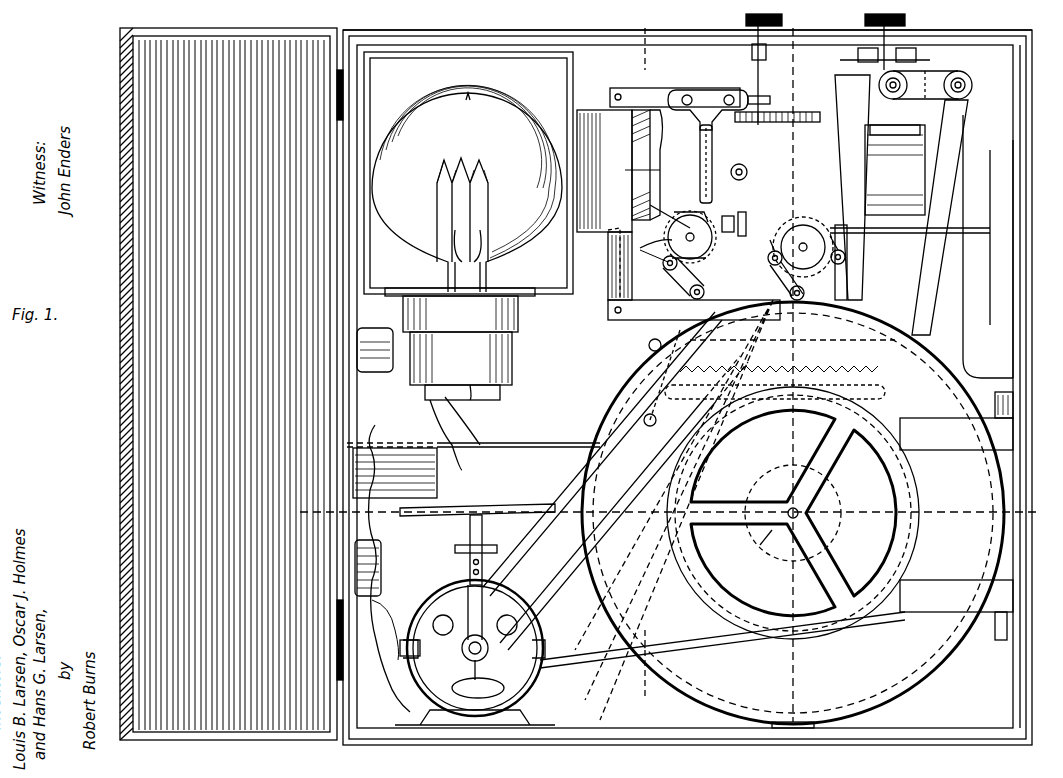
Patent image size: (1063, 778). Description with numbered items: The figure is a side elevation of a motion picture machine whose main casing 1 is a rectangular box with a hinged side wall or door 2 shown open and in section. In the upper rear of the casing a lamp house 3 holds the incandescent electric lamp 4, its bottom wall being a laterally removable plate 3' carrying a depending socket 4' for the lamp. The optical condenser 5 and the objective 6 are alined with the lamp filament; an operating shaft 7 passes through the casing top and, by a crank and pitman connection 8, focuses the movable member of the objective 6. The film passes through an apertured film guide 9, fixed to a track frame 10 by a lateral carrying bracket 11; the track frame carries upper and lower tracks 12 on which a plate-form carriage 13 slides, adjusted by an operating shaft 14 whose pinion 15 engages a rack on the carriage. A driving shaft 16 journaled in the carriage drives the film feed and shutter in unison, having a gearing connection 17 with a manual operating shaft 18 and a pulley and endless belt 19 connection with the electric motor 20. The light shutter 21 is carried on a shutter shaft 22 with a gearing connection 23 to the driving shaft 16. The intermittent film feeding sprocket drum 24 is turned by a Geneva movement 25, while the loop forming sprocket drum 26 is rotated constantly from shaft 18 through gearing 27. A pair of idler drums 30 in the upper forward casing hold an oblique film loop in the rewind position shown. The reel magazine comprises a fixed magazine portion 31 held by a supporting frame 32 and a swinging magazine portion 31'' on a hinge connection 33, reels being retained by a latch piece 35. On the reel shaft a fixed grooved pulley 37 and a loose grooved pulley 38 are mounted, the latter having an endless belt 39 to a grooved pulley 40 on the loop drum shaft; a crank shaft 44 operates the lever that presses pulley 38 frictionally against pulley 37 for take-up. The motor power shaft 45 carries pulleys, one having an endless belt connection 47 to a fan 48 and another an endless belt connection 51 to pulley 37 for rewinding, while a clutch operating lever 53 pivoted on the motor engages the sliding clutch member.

The main casing 1 is at (655, 44).
The hinged side wall or door 2 is at (262, 38).
The lamp house 3 is at (468, 151).
The laterally removable plate 3' is at (469, 305).
The incandescent electric lamp 4 is at (467, 188).
The depending socket 4' is at (460, 383).
The optical condenser 5 is at (632, 158).
The objective 6 is at (895, 170).
The operating shaft 7 is at (885, 55).
The crank and pitman connection 8 is at (905, 118).
The apertured film guide 9 is at (714, 148).
The track frame 10 is at (599, 266).
The lateral carrying bracket 11 is at (700, 92).
The tracks or slideways 12 is at (640, 95).
The carriage 13 is at (640, 128).
The operating shaft 14 is at (755, 74).
The pinion 15 is at (762, 124).
The driving shaft 16 is at (712, 268).
The gearing connection 17 is at (640, 178).
The operating shaft 18 is at (748, 170).
The pulley and endless belt 19 is at (580, 460).
The electric motor 20 is at (475, 652).
The light shutter 21 is at (438, 472).
The shutter shaft 22 is at (944, 235).
The gearing connection 23 is at (730, 216).
The intermittent film feeding sprocket drum 24 is at (640, 204).
The Geneva movement 25 is at (640, 252).
The loop forming sprocket drum 26 is at (860, 268).
The gearing 27 is at (790, 218).
The idler drums 30 is at (820, 78).
The fixed magazine portion 31 is at (670, 510).
The swinging magazine portion 31'' is at (628, 378).
The supporting standard or frame 32 is at (812, 654).
The hinge connection 33 is at (962, 458).
The latch piece 35 is at (788, 513).
The grooved pulley 37 is at (706, 583).
The grooved pulley 38 is at (791, 521).
The endless belt 39 is at (826, 346).
The grooved pulley 40 is at (790, 228).
The crank shaft 44 is at (540, 452).
The power shaft 45 is at (478, 679).
The endless belt connection 47 is at (455, 550).
The fan 48 is at (500, 510).
The endless belt connection 51 is at (600, 655).
The clutch operating lever 53 is at (395, 640).